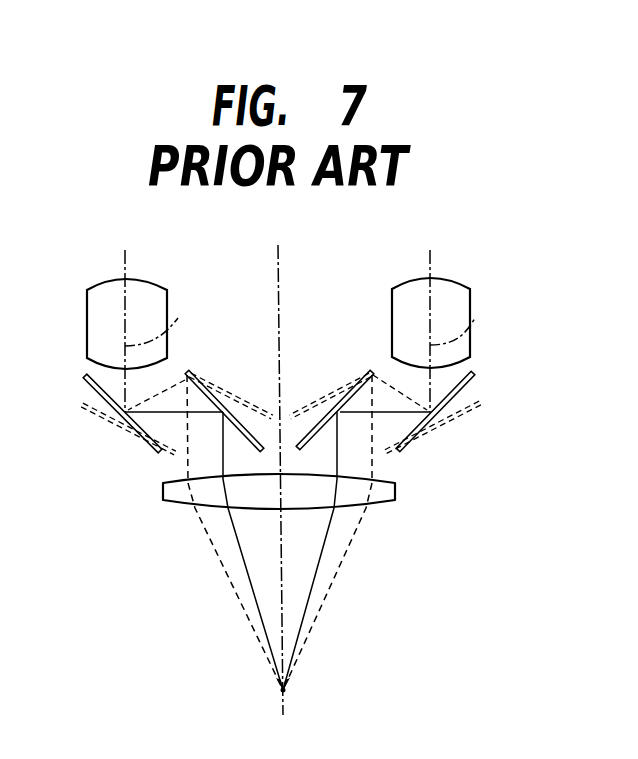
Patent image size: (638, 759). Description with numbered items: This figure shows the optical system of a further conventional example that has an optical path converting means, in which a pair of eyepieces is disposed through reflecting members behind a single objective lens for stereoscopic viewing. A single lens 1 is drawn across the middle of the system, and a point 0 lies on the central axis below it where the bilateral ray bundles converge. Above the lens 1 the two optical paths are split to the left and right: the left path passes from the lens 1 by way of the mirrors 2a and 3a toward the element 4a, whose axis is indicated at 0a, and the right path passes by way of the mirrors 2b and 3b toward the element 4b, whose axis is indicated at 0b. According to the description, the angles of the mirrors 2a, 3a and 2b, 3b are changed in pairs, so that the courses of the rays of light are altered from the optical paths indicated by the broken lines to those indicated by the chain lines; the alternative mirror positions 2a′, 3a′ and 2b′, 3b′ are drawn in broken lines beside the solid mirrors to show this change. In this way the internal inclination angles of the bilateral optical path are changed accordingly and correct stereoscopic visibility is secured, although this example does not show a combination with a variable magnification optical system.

The first light source lamp 4a is at (148, 296).
The optical axis of first lamp 0a is at (166, 323).
The second light source lamp 4b is at (452, 293).
The optical axis of second lamp 0b is at (468, 322).
The mirror 3a is at (150, 456).
The first reflecting mirror (rotated position) 3a′ is at (93, 413).
The mirror 2a is at (257, 446).
The first half mirror (rotated position) 2a′ is at (242, 395).
The mirror 2b is at (306, 441).
The second half mirror (rotated position) 2b′ is at (323, 394).
The mirror 3b is at (403, 447).
The second reflecting mirror (rotated position) 3b′ is at (475, 415).
The condenser lens 1 is at (176, 499).
The focal point 0 is at (290, 704).